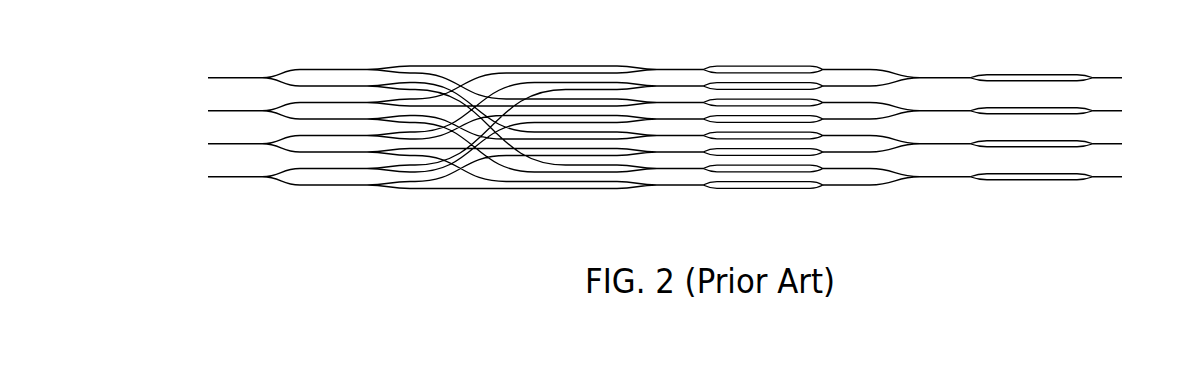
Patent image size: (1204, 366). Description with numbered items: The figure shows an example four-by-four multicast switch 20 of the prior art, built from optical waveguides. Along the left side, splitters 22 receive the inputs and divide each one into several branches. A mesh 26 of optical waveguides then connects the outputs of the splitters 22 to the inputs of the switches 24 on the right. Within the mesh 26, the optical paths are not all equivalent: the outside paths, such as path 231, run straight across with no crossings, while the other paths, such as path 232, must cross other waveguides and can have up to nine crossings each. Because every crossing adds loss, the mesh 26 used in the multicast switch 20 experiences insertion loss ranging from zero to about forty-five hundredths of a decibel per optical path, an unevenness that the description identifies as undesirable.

The 4×4 multicast switch 20 is at (1018, 53).
The splitters 22 is at (313, 197).
The switches 24 is at (797, 197).
The mesh of optical waveguides 26 is at (513, 140).
The outside path 231 is at (430, 65).
The path 232 is at (513, 68).